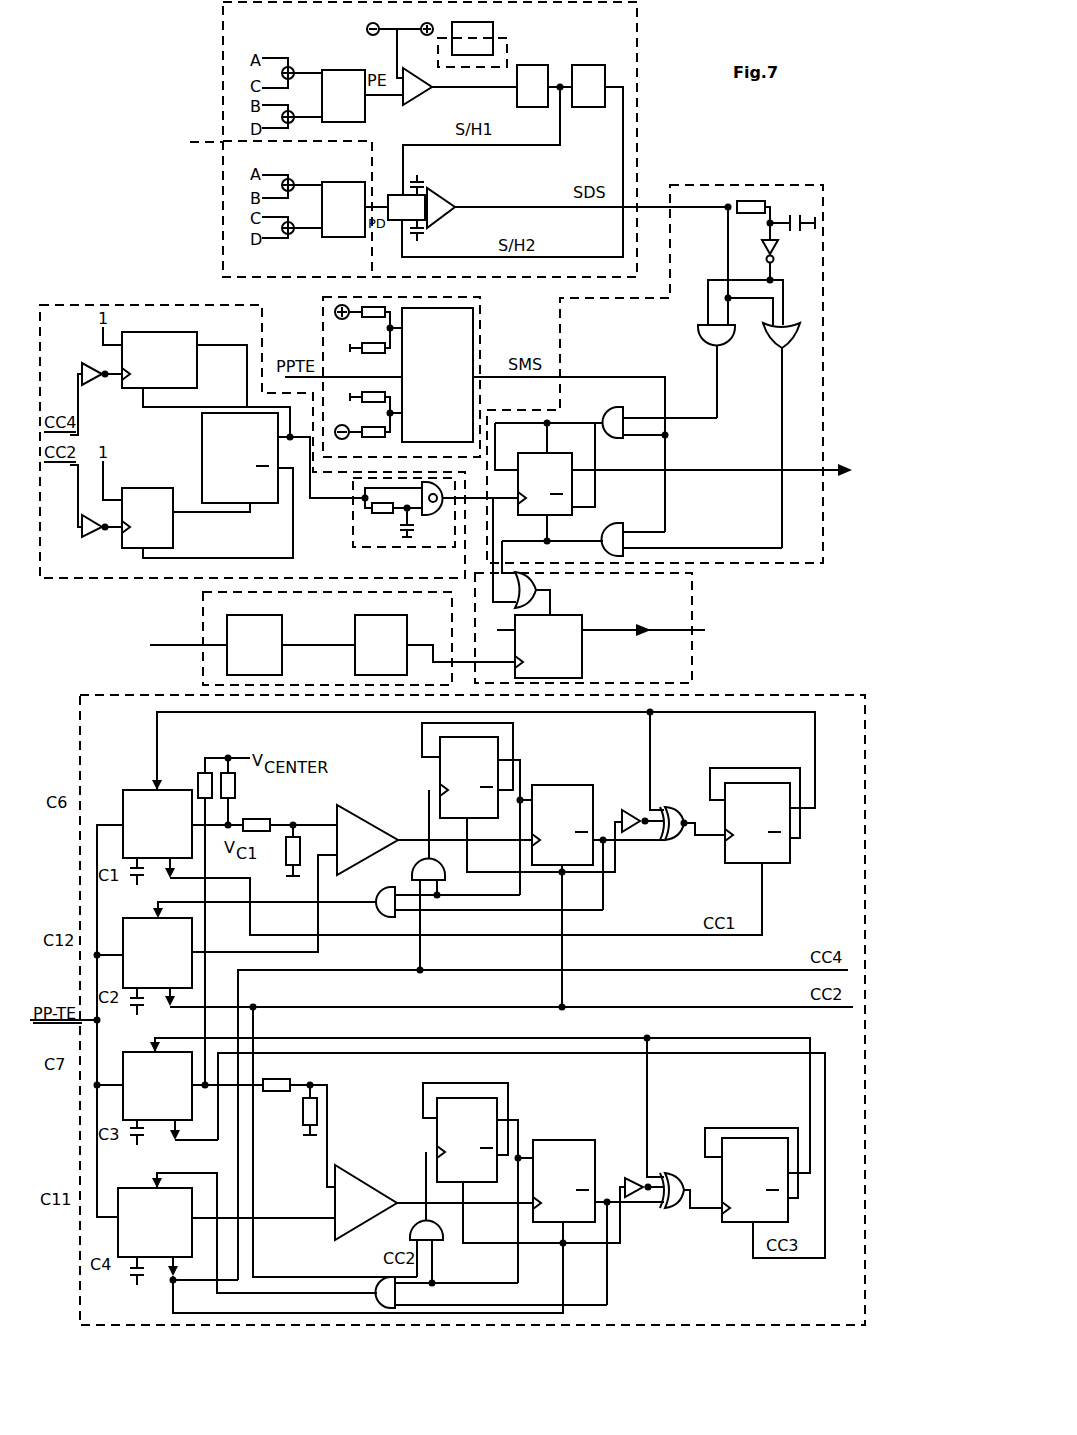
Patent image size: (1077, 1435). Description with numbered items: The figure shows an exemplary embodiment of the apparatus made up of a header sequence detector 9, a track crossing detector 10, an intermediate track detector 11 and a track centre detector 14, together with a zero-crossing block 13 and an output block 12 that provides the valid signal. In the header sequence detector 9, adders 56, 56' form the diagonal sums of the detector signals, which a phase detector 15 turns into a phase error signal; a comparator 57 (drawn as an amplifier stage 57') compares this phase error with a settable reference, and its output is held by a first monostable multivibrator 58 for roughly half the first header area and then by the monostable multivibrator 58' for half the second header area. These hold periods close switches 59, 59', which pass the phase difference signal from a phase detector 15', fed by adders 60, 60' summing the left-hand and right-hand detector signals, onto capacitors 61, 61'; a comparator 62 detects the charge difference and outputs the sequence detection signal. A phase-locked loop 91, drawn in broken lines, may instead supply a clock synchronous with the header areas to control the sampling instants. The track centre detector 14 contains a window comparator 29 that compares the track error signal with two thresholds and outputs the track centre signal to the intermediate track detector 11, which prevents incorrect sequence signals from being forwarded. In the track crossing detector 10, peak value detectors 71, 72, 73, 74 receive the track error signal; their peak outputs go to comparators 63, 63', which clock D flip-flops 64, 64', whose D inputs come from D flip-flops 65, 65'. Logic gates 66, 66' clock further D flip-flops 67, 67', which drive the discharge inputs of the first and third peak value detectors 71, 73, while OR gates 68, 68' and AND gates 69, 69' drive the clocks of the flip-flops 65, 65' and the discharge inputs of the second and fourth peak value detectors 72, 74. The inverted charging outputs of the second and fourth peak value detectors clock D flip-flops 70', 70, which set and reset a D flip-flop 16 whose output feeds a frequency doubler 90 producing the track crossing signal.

The header sequence detector 9 is at (648, 30).
The track crossing detector 10 is at (82, 303).
The intermediate track detector 11 is at (705, 185).
The valid flip-flop circuit 12 is at (690, 677).
The TZC circuit 13 is at (203, 650).
The track centre detector 14 is at (480, 318).
The phase detector 15 is at (343, 75).
The phase detector 15' is at (343, 194).
The D flip-flop 16 is at (202, 453).
The window comparator 29 is at (473, 345).
The adder 56 is at (302, 55).
The adder 56' is at (302, 102).
The comparator 57 is at (400, 22).
The comparator 57' is at (413, 76).
The first monostable multivibrator 58 is at (534, 68).
The monostable multivibrator 58' is at (589, 67).
The switch 59 is at (400, 182).
The switch 59' is at (380, 248).
The adder 60 is at (302, 169).
The adder 60' is at (302, 214).
The capacitor 61 is at (427, 173).
The capacitor 61' is at (437, 237).
The comparator 62 is at (446, 202).
The comparator 63 is at (367, 821).
The comparator 63' is at (366, 1187).
The D flip-flop 64 is at (598, 877).
The D flip-flop 64' is at (598, 1202).
The D flip-flop 65 is at (522, 809).
The D flip-flop 65' is at (524, 1176).
The logic gate 66 is at (673, 850).
The logic gate 66' is at (673, 1218).
The D flip-flop 67 is at (762, 832).
The D flip-flop 67' is at (757, 1204).
The OR gate 68 is at (456, 880).
The OR gate 68' is at (451, 1219).
The AND gate 69 is at (484, 888).
The AND gate 69' is at (473, 1273).
The D flip-flop 70 is at (169, 518).
The D flip-flop 70' is at (181, 360).
The peak value detector 71 is at (127, 793).
The peak value detector 72 is at (127, 925).
The peak value detector 73 is at (127, 1057).
The peak value detector 74 is at (126, 1193).
The frequency doubler 90 is at (347, 533).
The phase-locked loop 91 is at (493, 28).